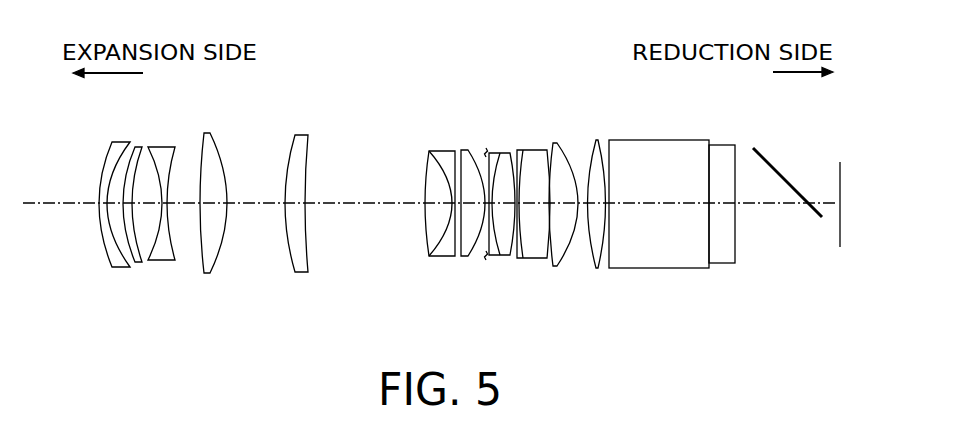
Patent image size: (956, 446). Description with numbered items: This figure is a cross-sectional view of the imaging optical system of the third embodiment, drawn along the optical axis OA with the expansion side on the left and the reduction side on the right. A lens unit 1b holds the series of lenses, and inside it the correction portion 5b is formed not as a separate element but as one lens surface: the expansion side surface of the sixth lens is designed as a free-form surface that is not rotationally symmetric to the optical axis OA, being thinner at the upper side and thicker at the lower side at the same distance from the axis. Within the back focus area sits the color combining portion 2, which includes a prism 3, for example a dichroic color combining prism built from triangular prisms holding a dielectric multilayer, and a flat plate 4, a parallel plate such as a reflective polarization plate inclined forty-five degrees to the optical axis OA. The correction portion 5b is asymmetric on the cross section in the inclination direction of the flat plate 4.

The optical axis OA is at (49, 205).
The lens unit 1b is at (610, 290).
The correction portion 5b is at (428, 181).
The color combining portion 2 is at (842, 289).
The prism 3 is at (662, 152).
The flat plate 4 is at (772, 168).